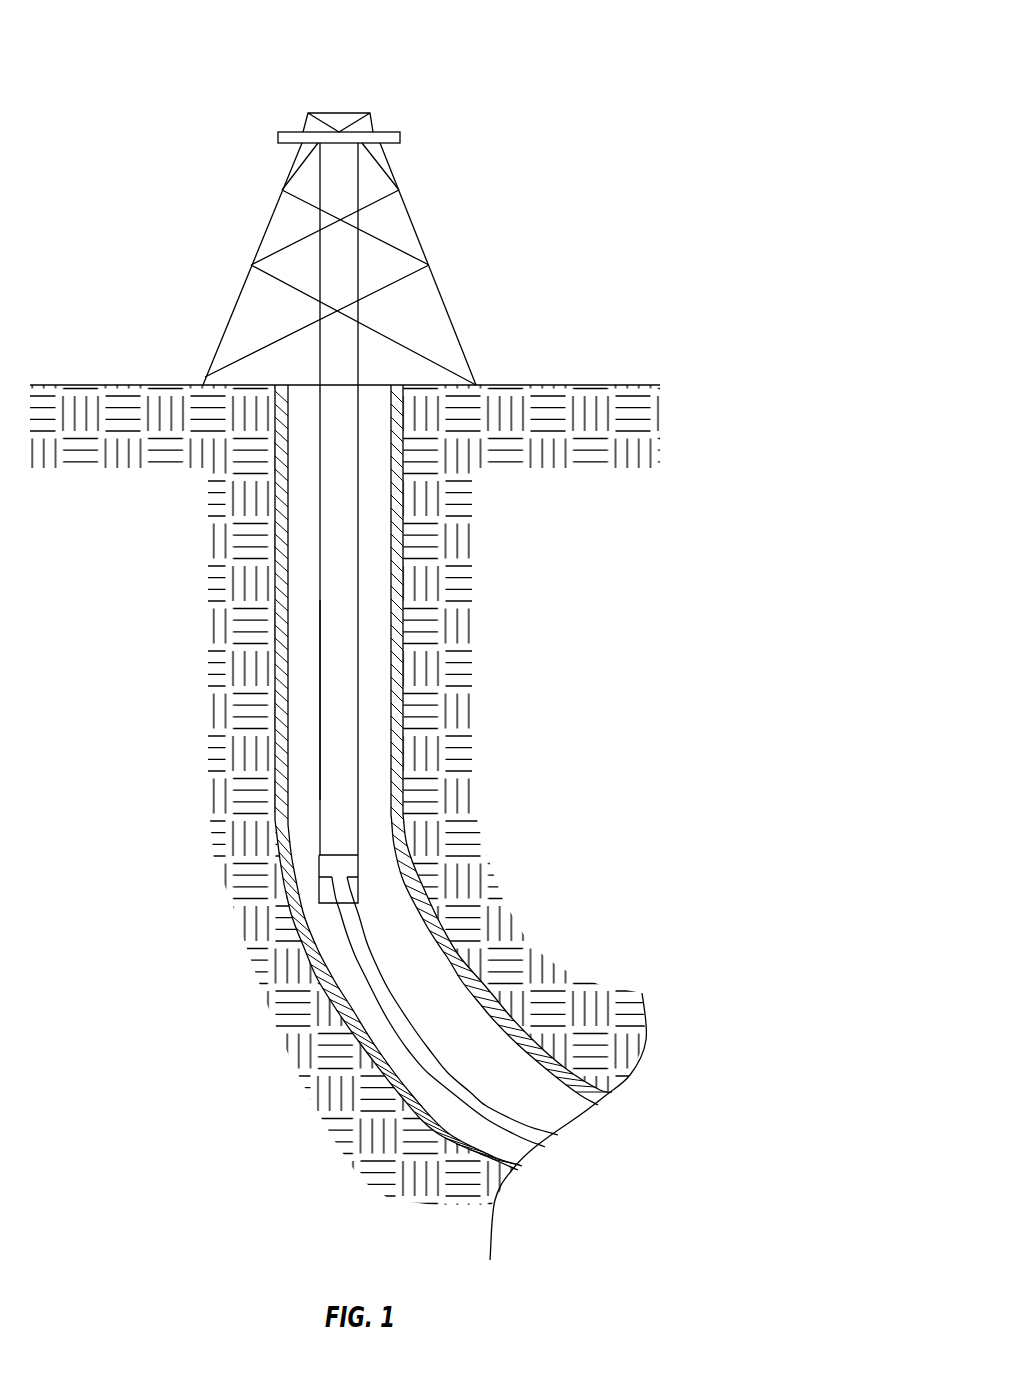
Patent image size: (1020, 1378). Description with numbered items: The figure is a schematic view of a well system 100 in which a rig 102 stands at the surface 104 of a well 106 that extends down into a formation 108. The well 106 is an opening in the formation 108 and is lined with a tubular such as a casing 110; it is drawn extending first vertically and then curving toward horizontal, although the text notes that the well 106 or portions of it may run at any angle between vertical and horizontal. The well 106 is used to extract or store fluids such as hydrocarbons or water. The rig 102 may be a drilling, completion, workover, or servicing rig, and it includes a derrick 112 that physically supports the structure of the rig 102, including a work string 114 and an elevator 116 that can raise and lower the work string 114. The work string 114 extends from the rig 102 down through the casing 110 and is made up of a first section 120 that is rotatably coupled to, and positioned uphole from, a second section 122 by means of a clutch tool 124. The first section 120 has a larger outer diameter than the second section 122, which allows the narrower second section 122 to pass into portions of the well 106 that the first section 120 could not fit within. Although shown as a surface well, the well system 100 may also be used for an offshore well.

The well system 100 is at (619, 60).
The rig 102 is at (250, 234).
The surface 104 is at (557, 384).
The well 106 is at (305, 381).
The formation 108 is at (230, 668).
The casing 110 is at (398, 771).
The derrick 112 is at (422, 240).
The work string 114 is at (372, 618).
The elevator 116 is at (393, 131).
The first section 120 is at (337, 707).
The second section 122 is at (430, 1040).
The clutch tool 124 is at (360, 884).